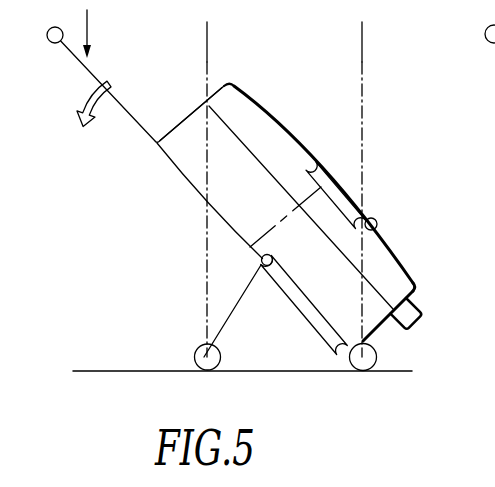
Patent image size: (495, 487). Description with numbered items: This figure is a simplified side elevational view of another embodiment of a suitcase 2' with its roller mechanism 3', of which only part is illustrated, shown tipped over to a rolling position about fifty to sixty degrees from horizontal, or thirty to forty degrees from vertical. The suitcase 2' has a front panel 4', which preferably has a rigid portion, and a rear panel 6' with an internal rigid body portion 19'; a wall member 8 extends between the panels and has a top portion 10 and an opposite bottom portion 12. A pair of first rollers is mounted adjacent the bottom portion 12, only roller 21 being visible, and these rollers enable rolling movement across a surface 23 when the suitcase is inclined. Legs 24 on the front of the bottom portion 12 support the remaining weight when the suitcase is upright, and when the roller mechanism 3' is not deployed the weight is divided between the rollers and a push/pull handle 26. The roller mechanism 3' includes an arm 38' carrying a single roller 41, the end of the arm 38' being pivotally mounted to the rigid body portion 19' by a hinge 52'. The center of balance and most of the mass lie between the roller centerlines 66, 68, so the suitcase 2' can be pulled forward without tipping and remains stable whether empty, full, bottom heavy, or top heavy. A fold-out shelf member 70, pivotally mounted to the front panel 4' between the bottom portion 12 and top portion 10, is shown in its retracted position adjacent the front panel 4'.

The suitcase 2' is at (314, 196).
The roller mechanism 3' is at (310, 370).
The front panel 4' is at (323, 180).
The rear panel 6' is at (210, 201).
The wall member 8 is at (185, 158).
The top portion 10 is at (182, 120).
The bottom portion 12 is at (380, 330).
The rigid body portion 19' is at (304, 305).
The first roller 21 is at (367, 373).
The surface 23 is at (233, 372).
The legs 24 is at (423, 315).
The push/pull handle 26 is at (100, 30).
The arm 38' is at (236, 311).
The roller 41 is at (200, 348).
The hinge 52' is at (287, 250).
The roller centerline 66 is at (205, 33).
The roller centerline 68 is at (364, 32).
The shelf member 70 is at (331, 164).